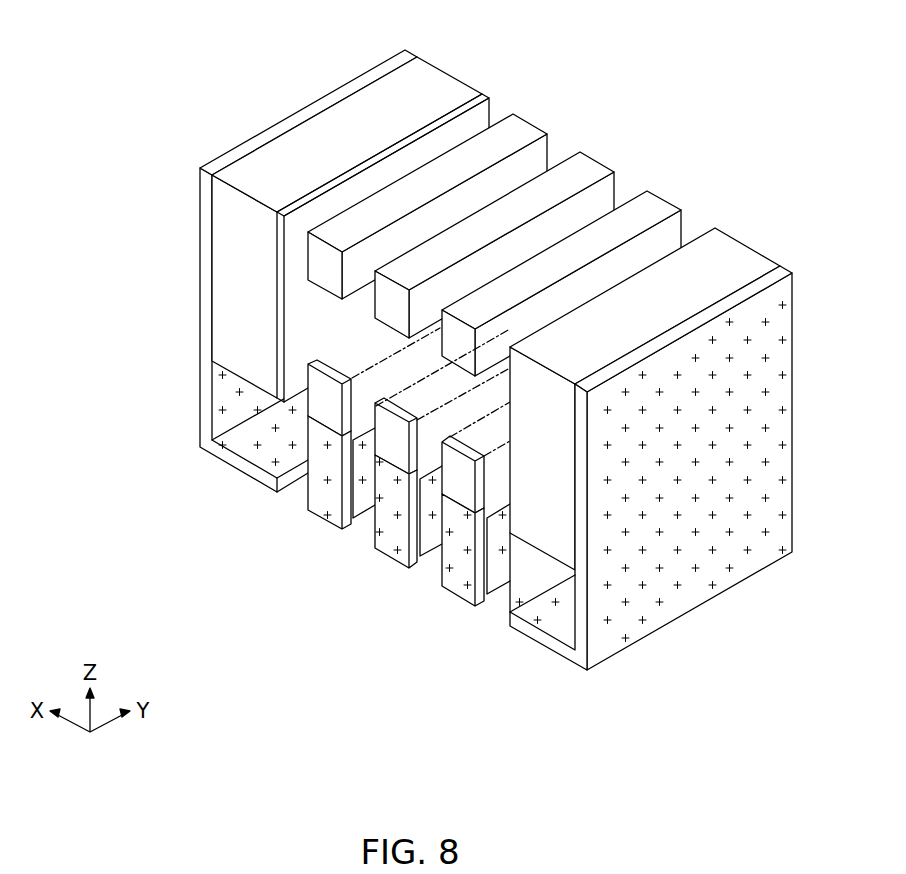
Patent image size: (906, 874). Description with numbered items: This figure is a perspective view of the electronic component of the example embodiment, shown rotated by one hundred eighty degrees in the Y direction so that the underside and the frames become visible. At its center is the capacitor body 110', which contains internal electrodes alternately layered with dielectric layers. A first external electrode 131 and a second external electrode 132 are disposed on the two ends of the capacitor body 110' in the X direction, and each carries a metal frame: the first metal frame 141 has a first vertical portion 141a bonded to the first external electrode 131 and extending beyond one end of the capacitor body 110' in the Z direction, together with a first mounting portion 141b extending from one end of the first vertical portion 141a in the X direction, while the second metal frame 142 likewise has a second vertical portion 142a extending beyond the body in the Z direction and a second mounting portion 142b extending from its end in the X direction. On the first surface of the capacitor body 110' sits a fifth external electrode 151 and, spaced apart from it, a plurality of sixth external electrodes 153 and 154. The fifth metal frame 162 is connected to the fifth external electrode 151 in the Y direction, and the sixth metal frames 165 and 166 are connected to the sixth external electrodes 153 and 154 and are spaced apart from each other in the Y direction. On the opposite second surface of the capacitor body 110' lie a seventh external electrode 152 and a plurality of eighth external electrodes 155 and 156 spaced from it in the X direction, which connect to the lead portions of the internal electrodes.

The capacitor body 110' is at (383, 206).
The second external electrode 132 is at (441, 95).
The first external electrode 131 is at (730, 258).
The eighth external electrode 156 is at (518, 136).
The seventh external electrode 152 is at (588, 172).
The eighth external electrode 155 is at (652, 207).
The sixth external electrode 153 is at (325, 402).
The fifth external electrode 151 is at (393, 535).
The sixth external electrode 154 is at (441, 522).
The 6-2nd metal frame 166 is at (322, 493).
The 5-2nd metal frame 162 is at (378, 550).
The 6-2nd metal frame 165 is at (465, 584).
The first metal frame 141 is at (603, 515).
The first vertical portion 141a is at (614, 620).
The first mounting portion 141b is at (537, 628).
The second metal frame 142 is at (236, 305).
The second vertical portion 142a is at (206, 418).
The second mounting portion 142b is at (234, 466).